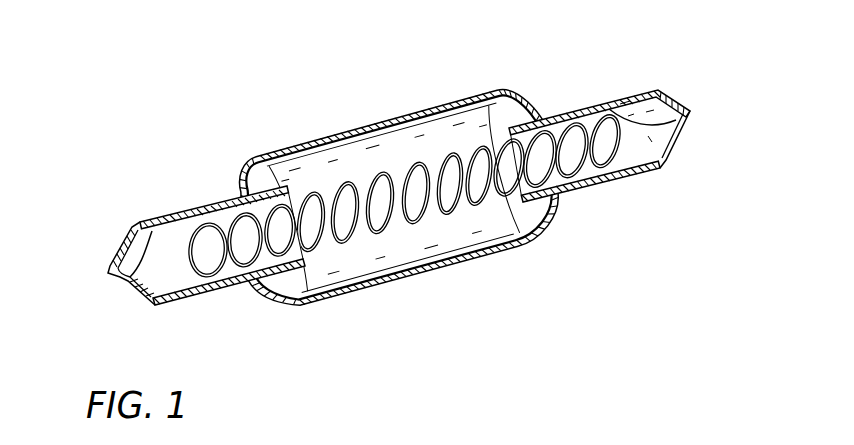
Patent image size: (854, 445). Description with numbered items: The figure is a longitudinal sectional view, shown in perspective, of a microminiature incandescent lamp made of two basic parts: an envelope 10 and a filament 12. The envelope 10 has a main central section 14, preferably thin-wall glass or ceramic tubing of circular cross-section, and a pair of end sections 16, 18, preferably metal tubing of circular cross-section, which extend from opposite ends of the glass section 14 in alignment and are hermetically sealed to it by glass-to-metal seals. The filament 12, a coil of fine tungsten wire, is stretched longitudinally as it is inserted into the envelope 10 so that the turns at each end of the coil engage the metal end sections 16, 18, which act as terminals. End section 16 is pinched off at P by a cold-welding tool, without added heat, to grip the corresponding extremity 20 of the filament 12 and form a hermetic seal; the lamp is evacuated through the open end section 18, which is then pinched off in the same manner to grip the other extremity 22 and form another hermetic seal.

The envelope 10 is at (394, 187).
The filament 12 is at (417, 240).
The central section 14 is at (465, 94).
The end section 16 is at (195, 240).
The end section 18 is at (614, 122).
The extremity of the filament 20 is at (140, 290).
The extremity of the filament 22 is at (685, 156).
The pinch-off P is at (132, 248).